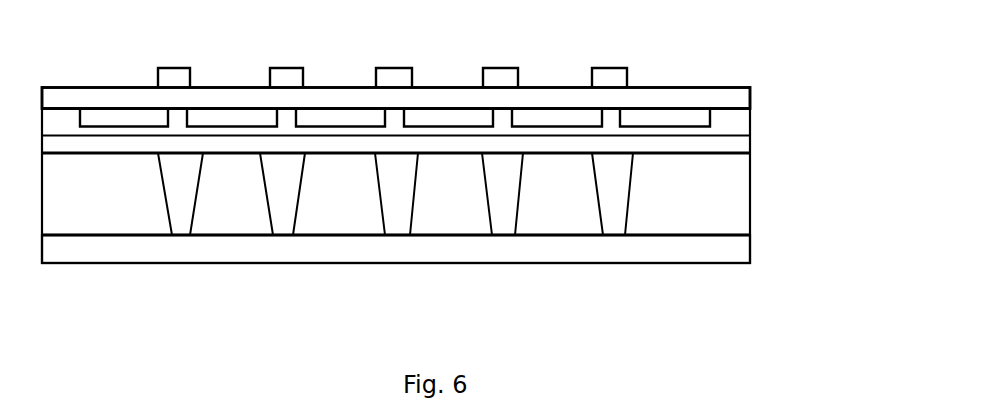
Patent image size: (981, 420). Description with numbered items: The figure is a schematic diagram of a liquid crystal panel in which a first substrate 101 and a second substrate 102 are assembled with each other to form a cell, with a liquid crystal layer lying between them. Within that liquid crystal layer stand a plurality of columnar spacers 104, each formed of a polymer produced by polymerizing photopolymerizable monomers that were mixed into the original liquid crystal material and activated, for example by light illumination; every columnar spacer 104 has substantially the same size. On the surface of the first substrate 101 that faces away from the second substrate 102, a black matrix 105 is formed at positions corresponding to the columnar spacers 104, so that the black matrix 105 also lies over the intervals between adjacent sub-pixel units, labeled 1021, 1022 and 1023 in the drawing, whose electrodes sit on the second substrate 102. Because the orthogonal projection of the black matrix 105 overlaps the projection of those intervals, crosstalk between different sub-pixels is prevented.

The first substrate 101 is at (732, 98).
The second substrate 102 is at (735, 248).
The columnar spacer 104 is at (620, 180).
The black matrix 105 is at (610, 78).
The first electrode 1021 is at (118, 120).
The second electrode 1022 is at (219, 120).
The third electrode 1023 is at (328, 119).